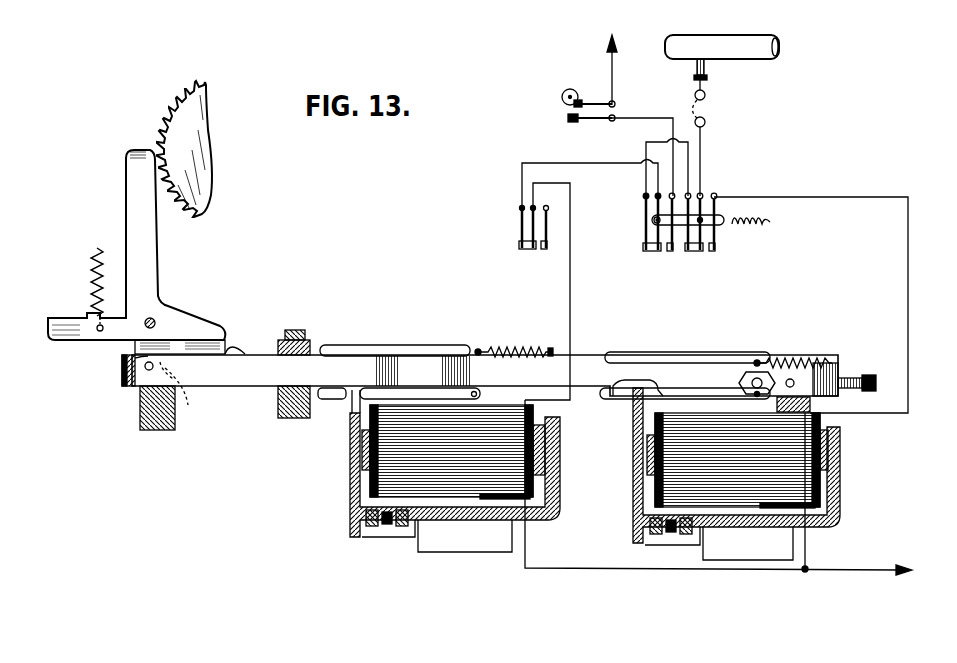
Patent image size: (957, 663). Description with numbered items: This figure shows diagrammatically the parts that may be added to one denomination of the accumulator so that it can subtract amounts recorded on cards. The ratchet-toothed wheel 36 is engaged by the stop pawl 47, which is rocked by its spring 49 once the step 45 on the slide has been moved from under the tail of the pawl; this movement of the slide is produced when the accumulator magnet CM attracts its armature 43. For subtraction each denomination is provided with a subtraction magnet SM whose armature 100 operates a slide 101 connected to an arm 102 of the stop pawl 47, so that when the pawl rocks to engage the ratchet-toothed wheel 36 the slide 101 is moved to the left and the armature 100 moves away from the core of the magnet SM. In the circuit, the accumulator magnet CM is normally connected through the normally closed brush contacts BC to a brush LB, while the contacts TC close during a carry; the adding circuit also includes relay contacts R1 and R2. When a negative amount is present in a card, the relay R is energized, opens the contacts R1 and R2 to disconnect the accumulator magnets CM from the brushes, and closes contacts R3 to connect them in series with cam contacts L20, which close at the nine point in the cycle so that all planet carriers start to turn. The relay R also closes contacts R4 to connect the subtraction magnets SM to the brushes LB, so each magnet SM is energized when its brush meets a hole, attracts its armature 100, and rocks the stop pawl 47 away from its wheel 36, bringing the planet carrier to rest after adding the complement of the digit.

The ratchet-toothed wheel 36 is at (186, 129).
The stop pawl 47 is at (140, 254).
The spring 49 is at (86, 292).
The step 45 is at (122, 372).
The slide 101 is at (249, 371).
The arm 102 is at (187, 395).
The armature 43 is at (352, 470).
The armature 100 is at (636, 446).
The accumulator magnet CM is at (477, 478).
The subtraction magnet SM is at (748, 480).
The cam contacts L20 is at (567, 113).
The brush LB is at (708, 62).
The brush contacts BC is at (522, 253).
The contacts TC is at (540, 253).
The relay R is at (770, 226).
The relay contacts R1 is at (691, 253).
The relay contacts R2 is at (647, 253).
The contacts R3 is at (661, 253).
The contacts R4 is at (715, 253).